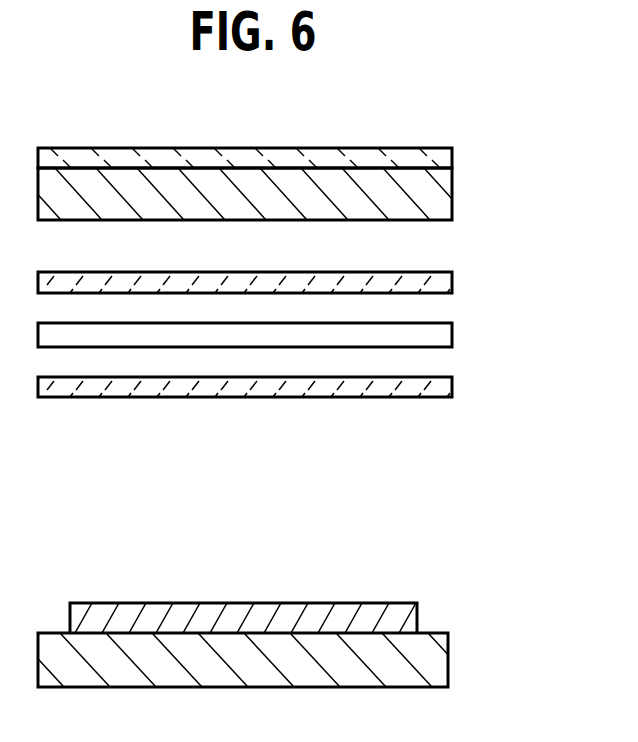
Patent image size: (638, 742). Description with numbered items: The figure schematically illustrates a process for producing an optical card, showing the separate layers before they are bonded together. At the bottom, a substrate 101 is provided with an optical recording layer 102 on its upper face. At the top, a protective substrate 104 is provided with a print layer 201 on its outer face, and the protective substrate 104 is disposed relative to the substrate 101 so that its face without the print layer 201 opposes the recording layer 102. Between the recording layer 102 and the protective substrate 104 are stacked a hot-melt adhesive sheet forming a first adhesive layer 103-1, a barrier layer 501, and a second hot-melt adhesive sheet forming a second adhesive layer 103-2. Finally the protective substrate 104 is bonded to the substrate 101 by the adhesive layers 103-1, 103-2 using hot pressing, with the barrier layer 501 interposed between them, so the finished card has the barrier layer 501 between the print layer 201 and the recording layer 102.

The substrate 101 is at (435, 660).
The optical recording layer 102 is at (407, 620).
The first adhesive layer 103-1 is at (433, 287).
The second adhesive layer 103-2 is at (433, 383).
The protective substrate 104 is at (443, 190).
The print layer 201 is at (440, 160).
The barrier layer 501 is at (438, 338).